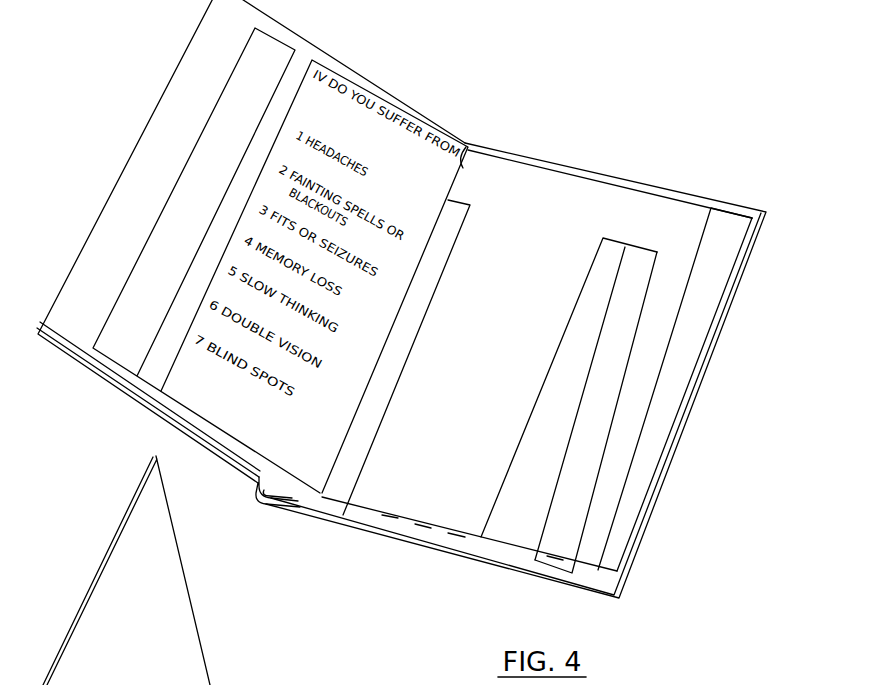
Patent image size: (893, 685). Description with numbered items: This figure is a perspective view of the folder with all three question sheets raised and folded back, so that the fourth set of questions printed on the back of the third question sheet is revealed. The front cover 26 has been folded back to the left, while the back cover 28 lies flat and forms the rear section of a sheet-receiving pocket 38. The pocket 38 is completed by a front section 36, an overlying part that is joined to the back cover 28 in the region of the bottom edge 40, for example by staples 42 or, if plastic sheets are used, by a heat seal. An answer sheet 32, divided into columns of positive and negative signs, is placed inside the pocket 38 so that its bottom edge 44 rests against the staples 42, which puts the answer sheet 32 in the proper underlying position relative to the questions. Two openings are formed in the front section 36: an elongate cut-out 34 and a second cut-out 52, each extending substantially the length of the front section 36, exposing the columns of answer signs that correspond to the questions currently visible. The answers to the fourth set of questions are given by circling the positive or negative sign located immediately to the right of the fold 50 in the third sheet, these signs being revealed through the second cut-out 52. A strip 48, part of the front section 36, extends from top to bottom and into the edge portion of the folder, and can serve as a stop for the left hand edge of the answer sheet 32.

The front cover 26 is at (197, 58).
The back cover 28 is at (688, 418).
The answer sheet 32 is at (728, 227).
The elongate cut-out 34 is at (610, 255).
The front section of the pocket 36 is at (553, 193).
The sheet-receiving pocket 38 is at (706, 228).
The bottom edge 40 is at (553, 561).
The staples 42 is at (364, 505).
The bottom edge of the answer sheet 44 is at (592, 566).
The strip 48 is at (309, 497).
The fold 50 is at (462, 167).
The second cut-out 52 is at (412, 344).